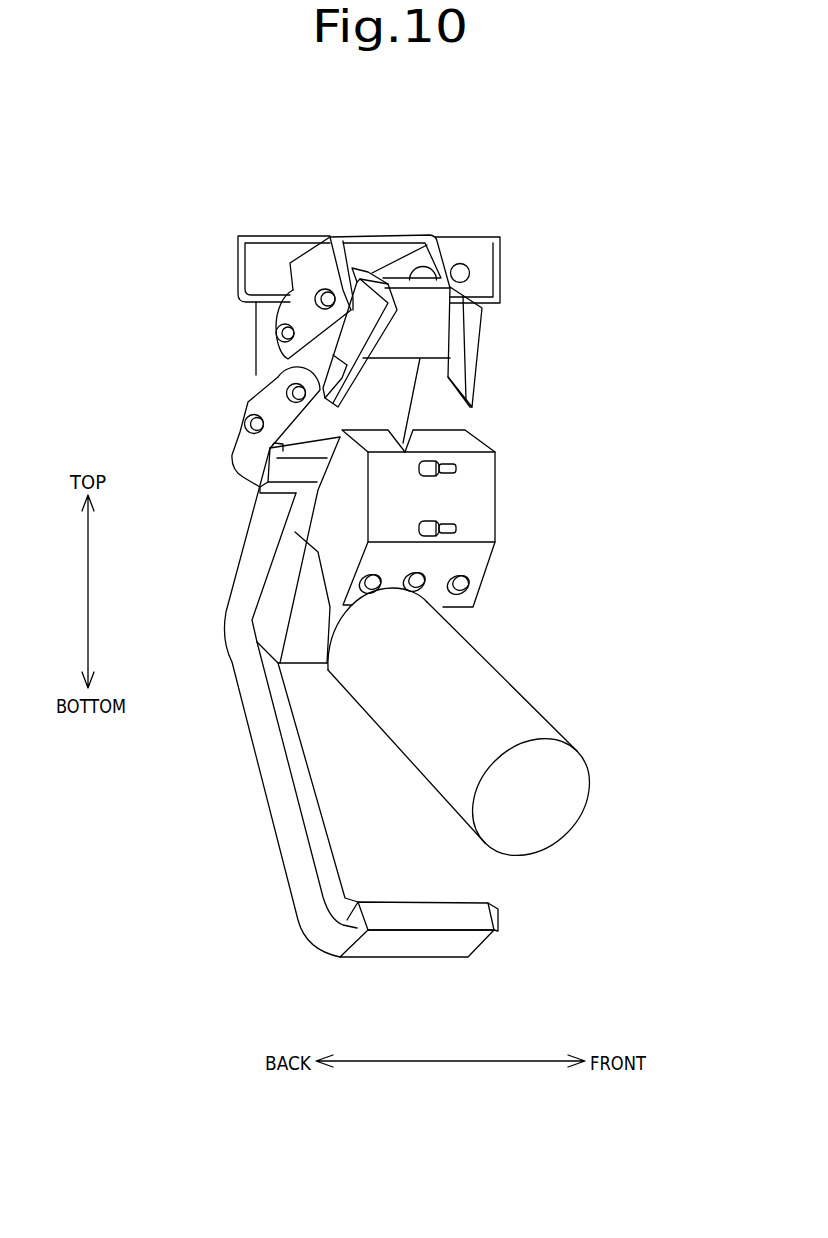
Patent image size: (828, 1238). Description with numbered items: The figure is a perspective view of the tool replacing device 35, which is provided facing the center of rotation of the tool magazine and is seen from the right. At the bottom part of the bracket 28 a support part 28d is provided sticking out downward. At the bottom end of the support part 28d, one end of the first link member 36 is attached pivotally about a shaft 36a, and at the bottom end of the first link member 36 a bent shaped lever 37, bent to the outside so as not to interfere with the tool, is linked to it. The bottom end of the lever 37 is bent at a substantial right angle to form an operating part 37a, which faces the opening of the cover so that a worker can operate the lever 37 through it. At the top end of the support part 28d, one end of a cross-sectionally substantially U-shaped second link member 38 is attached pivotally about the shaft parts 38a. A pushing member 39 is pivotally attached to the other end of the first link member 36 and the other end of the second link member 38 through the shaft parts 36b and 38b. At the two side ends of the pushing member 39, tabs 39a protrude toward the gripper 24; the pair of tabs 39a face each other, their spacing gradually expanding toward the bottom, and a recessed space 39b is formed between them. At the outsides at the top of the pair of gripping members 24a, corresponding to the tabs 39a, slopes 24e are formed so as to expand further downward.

The gripper 24 is at (503, 507).
The gripping members 24a is at (297, 570).
The slopes 24e is at (320, 503).
The bracket 28 is at (237, 268).
The support part 28d is at (263, 343).
The tool replacing device 35 is at (588, 417).
The first link member 36 is at (240, 450).
The shaft 36a is at (246, 424).
The shaft part 36b is at (288, 391).
The lever 37 is at (263, 737).
The operating part 37a is at (430, 947).
The second link member 38 is at (368, 236).
The shaft parts 38a is at (275, 327).
The shaft part 38b is at (319, 289).
The pushing member 39 is at (358, 268).
The tabs 39a is at (352, 328).
The recessed space 39b is at (425, 319).